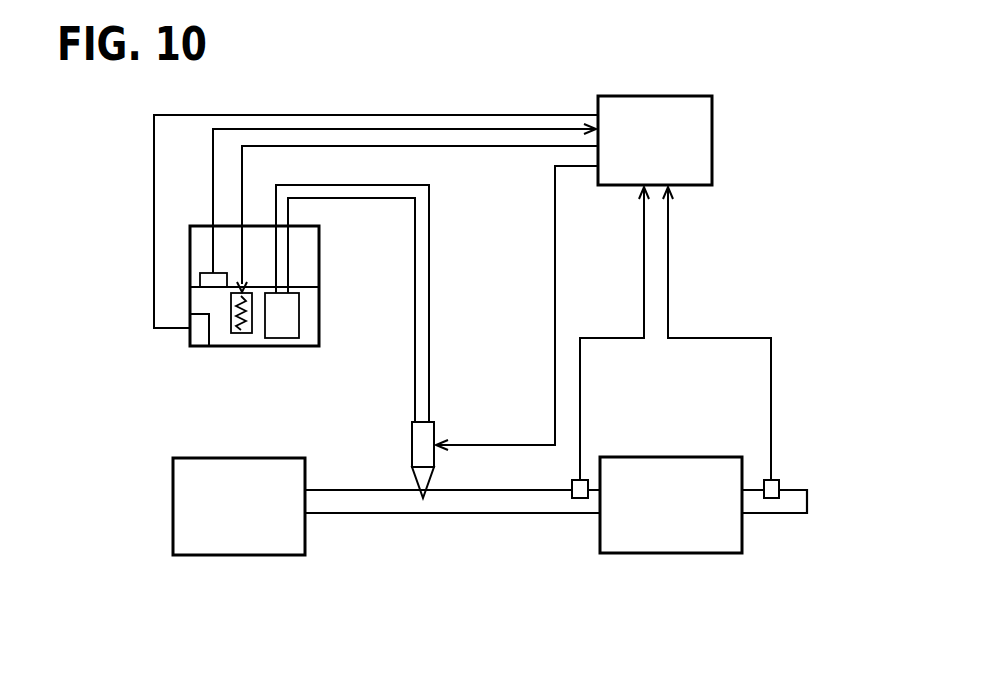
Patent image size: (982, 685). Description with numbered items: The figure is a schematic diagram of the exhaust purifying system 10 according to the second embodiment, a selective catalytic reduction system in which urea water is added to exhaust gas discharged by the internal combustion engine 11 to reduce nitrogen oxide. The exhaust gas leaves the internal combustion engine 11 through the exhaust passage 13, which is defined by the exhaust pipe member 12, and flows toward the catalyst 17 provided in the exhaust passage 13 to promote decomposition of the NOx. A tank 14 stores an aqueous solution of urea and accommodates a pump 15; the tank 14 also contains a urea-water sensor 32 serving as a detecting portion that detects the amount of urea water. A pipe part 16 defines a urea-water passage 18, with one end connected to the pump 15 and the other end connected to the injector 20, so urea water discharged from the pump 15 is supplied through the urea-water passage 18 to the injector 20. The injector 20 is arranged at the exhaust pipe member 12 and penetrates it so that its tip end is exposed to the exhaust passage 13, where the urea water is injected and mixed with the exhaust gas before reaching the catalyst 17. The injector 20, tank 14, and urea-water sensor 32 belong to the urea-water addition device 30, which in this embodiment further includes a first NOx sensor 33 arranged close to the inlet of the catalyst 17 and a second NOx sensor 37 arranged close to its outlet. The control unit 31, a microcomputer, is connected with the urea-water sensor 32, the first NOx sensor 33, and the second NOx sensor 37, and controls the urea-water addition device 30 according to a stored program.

The exhaust purifying system 10 is at (248, 303).
The internal combustion engine 11 is at (237, 556).
The exhaust pipe member 12 is at (367, 514).
The exhaust passage 13 is at (480, 505).
The tank 14 is at (319, 258).
The pump 15 is at (299, 305).
The pipe part 16 is at (429, 236).
The catalyst 17 is at (675, 457).
The urea-water passage 18 is at (422, 345).
The injector 20 is at (412, 440).
The urea-water addition device 30 is at (704, 117).
The control unit 31 is at (655, 96).
The urea-water sensor 32 is at (200, 281).
The first NOx sensor 33 is at (580, 500).
The second NOx sensor 37 is at (775, 478).